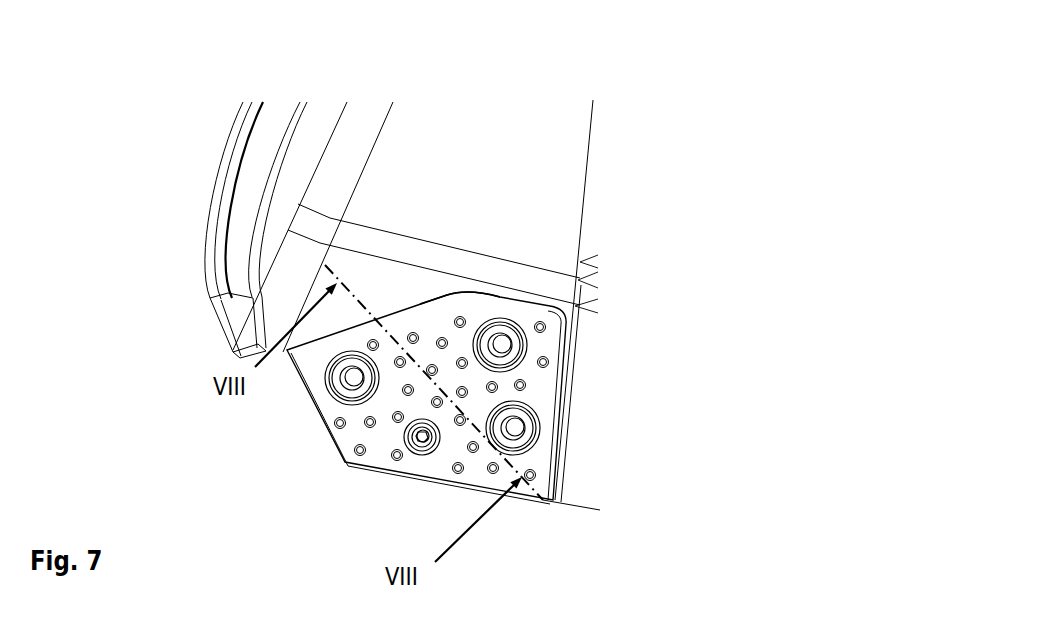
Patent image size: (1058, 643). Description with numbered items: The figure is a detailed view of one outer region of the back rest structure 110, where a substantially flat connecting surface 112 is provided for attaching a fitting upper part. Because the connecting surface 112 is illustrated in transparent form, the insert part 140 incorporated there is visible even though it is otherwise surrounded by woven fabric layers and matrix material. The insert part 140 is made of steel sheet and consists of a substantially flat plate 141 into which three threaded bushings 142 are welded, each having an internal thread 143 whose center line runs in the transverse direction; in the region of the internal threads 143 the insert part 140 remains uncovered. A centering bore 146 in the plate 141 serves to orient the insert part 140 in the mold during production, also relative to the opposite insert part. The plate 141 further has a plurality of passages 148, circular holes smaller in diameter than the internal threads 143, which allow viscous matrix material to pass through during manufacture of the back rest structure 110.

The back rest structure 110 is at (550, 183).
The connecting surface 112 is at (327, 337).
The insert part 140 is at (545, 397).
The plate 141 is at (475, 305).
The threaded bushing 142 is at (490, 322).
The internal thread 143 is at (500, 347).
The centering bore 146 is at (422, 443).
The passages 148 is at (547, 362).